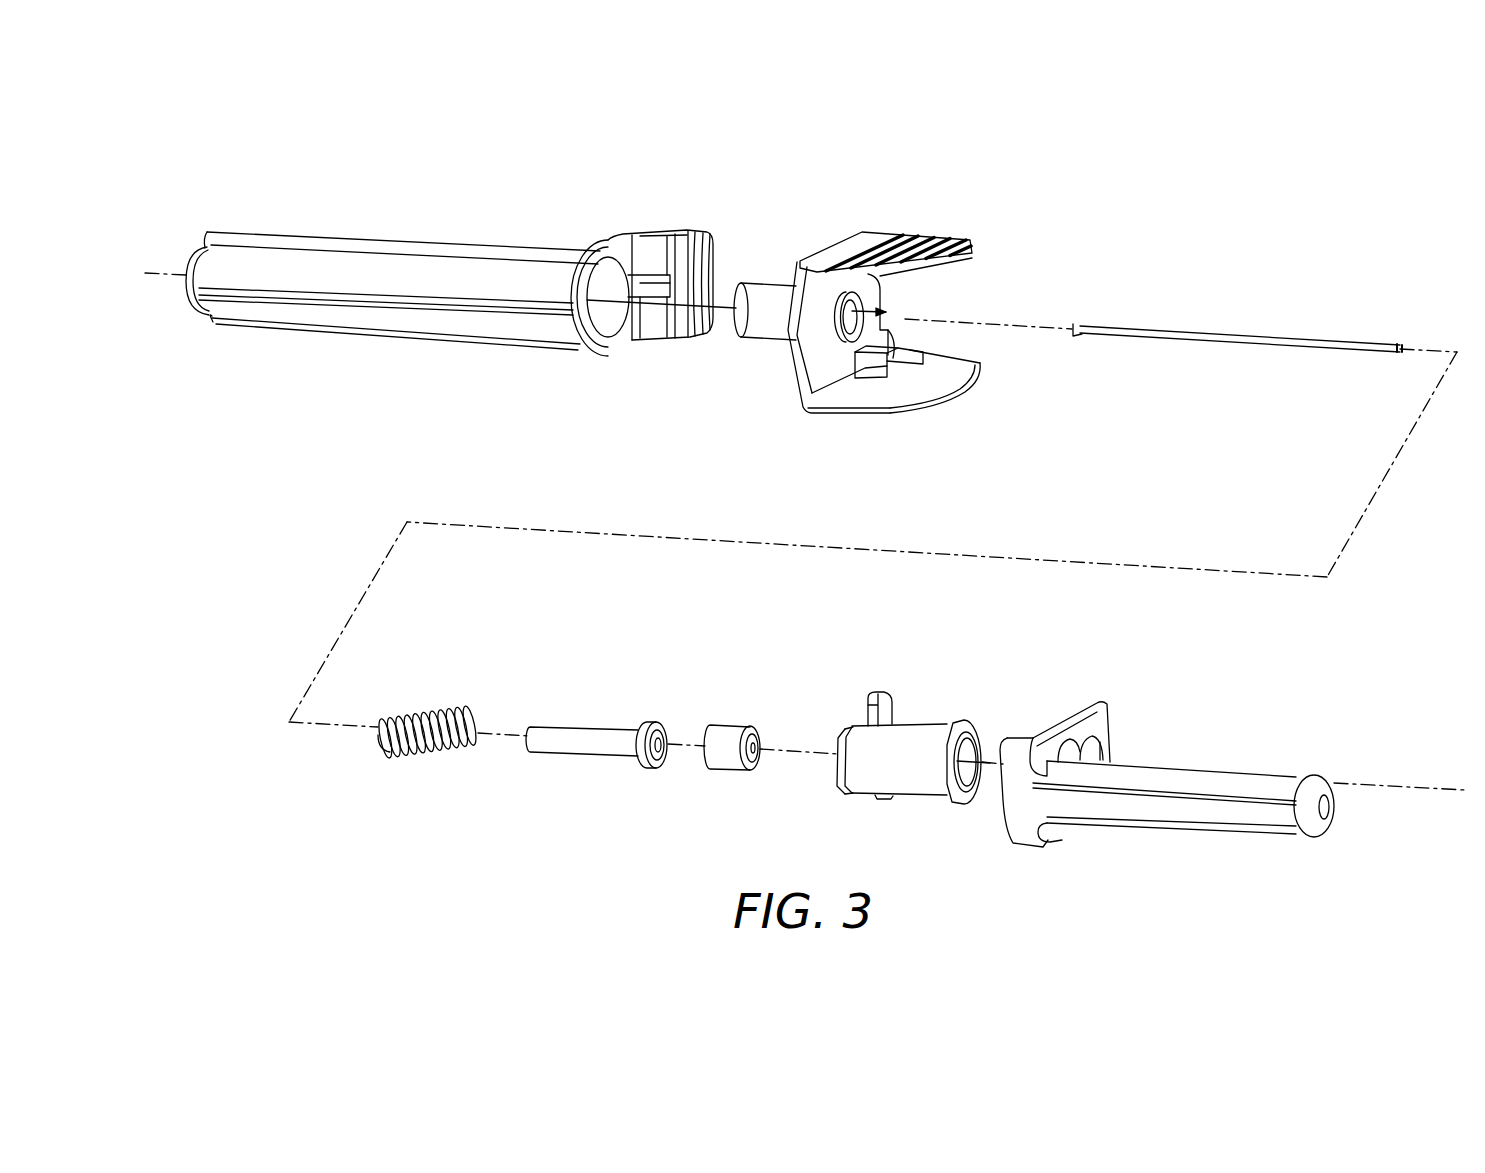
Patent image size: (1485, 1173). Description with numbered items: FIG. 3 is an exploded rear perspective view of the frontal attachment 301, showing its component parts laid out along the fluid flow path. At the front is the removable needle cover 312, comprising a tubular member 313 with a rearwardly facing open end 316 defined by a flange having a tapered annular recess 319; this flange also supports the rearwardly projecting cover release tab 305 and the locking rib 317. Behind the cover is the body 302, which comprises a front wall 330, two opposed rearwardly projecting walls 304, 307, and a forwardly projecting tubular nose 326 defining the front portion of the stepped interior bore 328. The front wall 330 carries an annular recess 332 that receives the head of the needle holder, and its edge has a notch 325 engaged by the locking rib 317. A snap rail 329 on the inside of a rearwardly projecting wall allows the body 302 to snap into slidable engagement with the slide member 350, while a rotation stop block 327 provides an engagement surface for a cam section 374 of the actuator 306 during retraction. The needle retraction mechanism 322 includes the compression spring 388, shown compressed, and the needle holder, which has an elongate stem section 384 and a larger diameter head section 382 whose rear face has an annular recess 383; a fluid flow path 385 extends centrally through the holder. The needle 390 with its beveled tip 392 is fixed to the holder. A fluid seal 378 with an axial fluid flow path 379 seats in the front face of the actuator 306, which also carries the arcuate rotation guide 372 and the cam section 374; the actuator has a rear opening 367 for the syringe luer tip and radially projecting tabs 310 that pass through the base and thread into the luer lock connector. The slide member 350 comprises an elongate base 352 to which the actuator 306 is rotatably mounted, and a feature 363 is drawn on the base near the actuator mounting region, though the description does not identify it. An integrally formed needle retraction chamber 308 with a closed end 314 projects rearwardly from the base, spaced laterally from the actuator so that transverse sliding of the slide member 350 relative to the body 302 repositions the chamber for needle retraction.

The frontal attachment 301 is at (1222, 222).
The body 302 is at (935, 205).
The rearwardly projecting wall 304 is at (923, 232).
The cover release tab 305 is at (703, 240).
The actuator 306 is at (917, 715).
The rearwardly projecting wall 307 is at (953, 402).
The needle retraction chamber 308 is at (1173, 815).
The tab 310 is at (960, 725).
The removable needle cover 312 is at (475, 220).
The tubular member 313 is at (403, 320).
The closed end 314 is at (1330, 808).
The open end 316 is at (597, 285).
The locking rib 317 is at (632, 292).
The tapered annular recess 319 is at (598, 340).
The needle retraction mechanism 322 is at (667, 717).
The notch 325 is at (882, 293).
The tubular nose 326 is at (773, 330).
The rotation stop block 327 is at (897, 322).
The interior bore 328 is at (882, 312).
The snap rail 329 is at (877, 378).
The front wall 330 is at (808, 305).
The annular recess 332 is at (858, 378).
The slide member 350 is at (1122, 713).
The base 352 is at (1090, 718).
The arch 363 is at (1120, 757).
The rear opening 367 is at (967, 773).
The arcuate rotation guide 372 is at (848, 793).
The cam section 374 is at (875, 693).
The fluid seal 378 is at (725, 730).
The axial fluid flow path 379 is at (752, 752).
The head section 382 is at (648, 772).
The annular recess 383 is at (665, 755).
The stem section 384 is at (555, 748).
The fluid flow path 385 is at (660, 762).
The spring 388 is at (408, 752).
The needle 390 is at (1272, 330).
The beveled tip 392 is at (1080, 334).